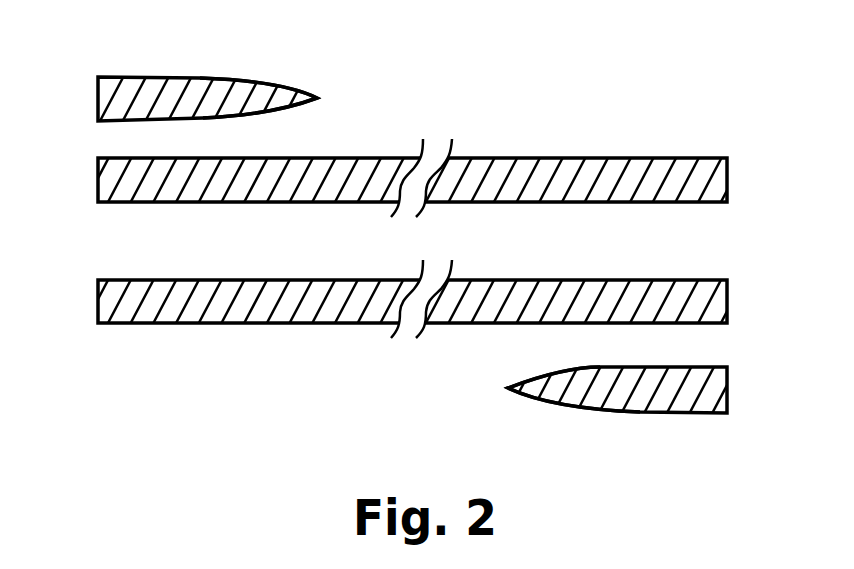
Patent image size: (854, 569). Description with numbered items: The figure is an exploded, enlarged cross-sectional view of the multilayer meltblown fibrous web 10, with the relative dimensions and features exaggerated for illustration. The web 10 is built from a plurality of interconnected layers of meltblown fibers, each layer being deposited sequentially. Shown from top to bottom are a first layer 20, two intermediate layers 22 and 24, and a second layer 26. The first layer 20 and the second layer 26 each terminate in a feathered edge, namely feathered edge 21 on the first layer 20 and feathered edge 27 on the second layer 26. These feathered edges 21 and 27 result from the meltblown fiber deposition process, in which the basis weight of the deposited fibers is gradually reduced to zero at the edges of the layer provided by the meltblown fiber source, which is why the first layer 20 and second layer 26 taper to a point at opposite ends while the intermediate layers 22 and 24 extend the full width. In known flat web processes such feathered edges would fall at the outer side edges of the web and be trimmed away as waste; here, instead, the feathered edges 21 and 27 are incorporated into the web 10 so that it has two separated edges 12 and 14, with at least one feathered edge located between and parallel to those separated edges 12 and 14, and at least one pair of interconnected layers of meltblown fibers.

The multilayer meltblown fibrous web 10 is at (84, 68).
The separated edge 12 is at (152, 63).
The separated edge 14 is at (762, 100).
The first layer 20 is at (170, 77).
The feathered edge 21 is at (292, 97).
The intermediate layer 22 is at (693, 172).
The intermediate layer 24 is at (707, 303).
The second layer 26 is at (707, 395).
The feathered edge 27 is at (513, 391).